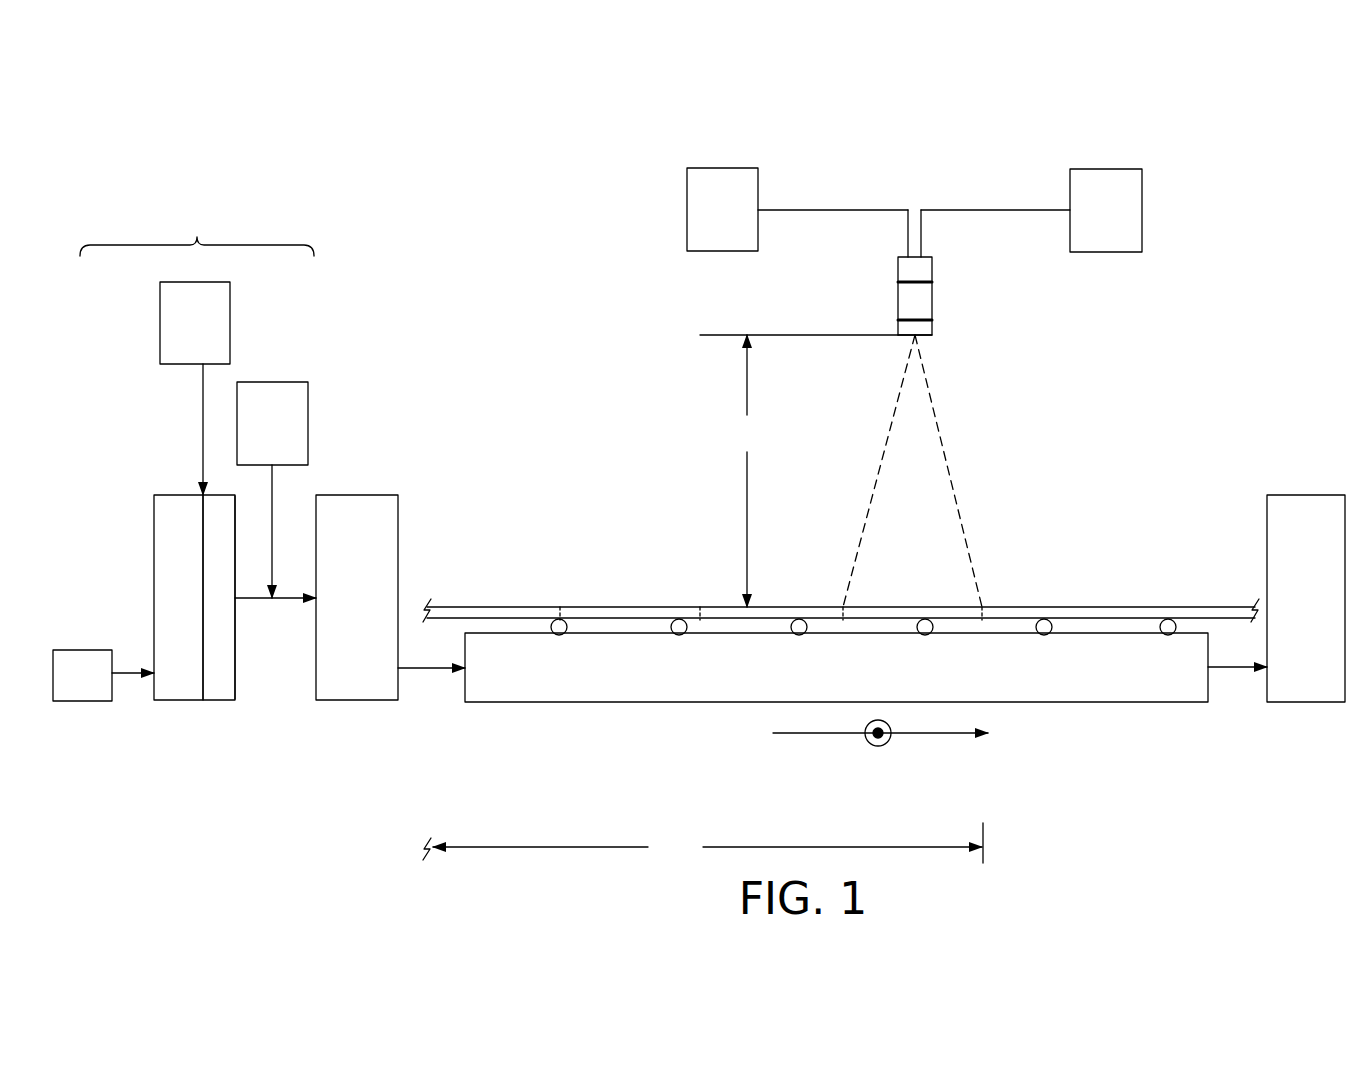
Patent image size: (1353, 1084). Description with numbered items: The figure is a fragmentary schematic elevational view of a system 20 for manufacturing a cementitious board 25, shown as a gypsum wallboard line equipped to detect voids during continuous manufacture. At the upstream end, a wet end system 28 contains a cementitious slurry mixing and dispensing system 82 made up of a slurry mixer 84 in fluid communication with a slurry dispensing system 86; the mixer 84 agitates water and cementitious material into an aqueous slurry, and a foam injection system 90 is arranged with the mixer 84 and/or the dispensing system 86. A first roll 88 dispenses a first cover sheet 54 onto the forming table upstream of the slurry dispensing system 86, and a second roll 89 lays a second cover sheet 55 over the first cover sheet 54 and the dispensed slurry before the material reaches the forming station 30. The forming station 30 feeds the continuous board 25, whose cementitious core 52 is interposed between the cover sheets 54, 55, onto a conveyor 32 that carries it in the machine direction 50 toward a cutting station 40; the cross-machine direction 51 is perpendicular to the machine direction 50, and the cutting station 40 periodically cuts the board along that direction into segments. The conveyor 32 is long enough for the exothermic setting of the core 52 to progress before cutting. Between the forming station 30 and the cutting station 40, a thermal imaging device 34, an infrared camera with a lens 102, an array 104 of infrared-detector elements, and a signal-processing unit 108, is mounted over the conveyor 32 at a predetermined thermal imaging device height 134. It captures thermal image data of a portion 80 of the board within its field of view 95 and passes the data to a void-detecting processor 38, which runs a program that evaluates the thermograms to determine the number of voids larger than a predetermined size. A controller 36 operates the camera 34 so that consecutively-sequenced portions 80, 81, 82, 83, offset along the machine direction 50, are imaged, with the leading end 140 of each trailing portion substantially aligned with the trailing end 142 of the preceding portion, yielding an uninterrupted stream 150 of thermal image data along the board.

The system 20 is at (307, 180).
The wet end system 28 is at (197, 231).
The foam injection system 90 is at (187, 327).
The second roll 89 is at (272, 382).
The cementitious slurry mixing and dispensing system 82 is at (178, 490).
The slurry mixer 84 is at (172, 550).
The slurry dispensing system 86 is at (221, 685).
The first roll 88 is at (82, 650).
The forming station 30 is at (355, 495).
The conveyor 32 is at (617, 673).
The cementitious board 25 is at (600, 607).
The first cover sheet 54 is at (653, 623).
The cementitious core 52 is at (643, 612).
The second cover sheet 55 is at (680, 607).
The portion 83 is at (484, 605).
The second portion 81 is at (793, 607).
The portion 80 is at (907, 607).
The trailing end 142 is at (560, 607).
The leading end 140 is at (982, 607).
The field of view 95 is at (982, 607).
The thermal imaging device 34 is at (923, 286).
The signal-processing unit 108 is at (898, 268).
The array of infrared-detector elements 104 is at (898, 298).
The lens 102 is at (898, 325).
The controller 36 is at (687, 210).
The processor 38 is at (1142, 210).
The cutting station 40 is at (1267, 537).
The thermal imaging device height 134 is at (799, 471).
The machine direction 50 is at (822, 733).
The cross-machine direction 51 is at (880, 745).
The uninterrupted stream 150 is at (703, 843).